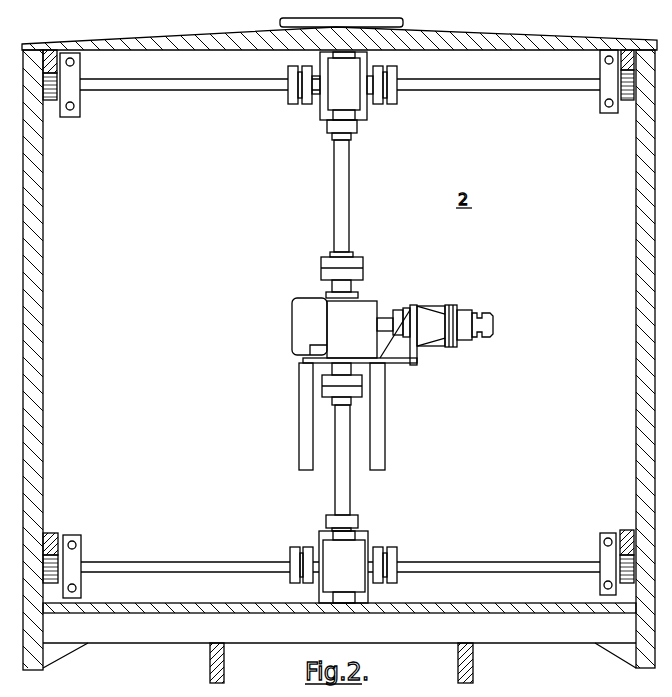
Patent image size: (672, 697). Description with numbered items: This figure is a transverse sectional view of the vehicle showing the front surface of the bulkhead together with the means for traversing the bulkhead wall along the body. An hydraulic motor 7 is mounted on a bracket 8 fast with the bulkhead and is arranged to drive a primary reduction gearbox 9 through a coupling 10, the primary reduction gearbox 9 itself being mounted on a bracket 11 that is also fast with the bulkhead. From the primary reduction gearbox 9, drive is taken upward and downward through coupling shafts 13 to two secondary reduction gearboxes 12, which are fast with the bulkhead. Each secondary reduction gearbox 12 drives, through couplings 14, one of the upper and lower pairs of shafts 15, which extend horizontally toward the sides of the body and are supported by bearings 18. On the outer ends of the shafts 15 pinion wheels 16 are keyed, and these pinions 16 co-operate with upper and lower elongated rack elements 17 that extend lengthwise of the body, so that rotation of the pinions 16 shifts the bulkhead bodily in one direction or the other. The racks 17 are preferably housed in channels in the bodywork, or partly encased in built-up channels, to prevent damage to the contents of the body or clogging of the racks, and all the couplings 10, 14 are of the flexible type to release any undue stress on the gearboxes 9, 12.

The hydraulic motor 7 is at (455, 312).
The bracket 8 is at (412, 360).
The primary reduction gearbox 9 is at (300, 330).
The coupling 10 is at (388, 323).
The bracket 11 is at (307, 410).
The secondary reduction gearbox 12 is at (352, 100).
The coupling shaft 13 is at (346, 195).
The coupling 14 is at (308, 550).
The shaft 15 is at (178, 84).
The pinion wheel 16 is at (51, 100).
The rack element 17 is at (50, 50).
The bearing 18 is at (74, 100).